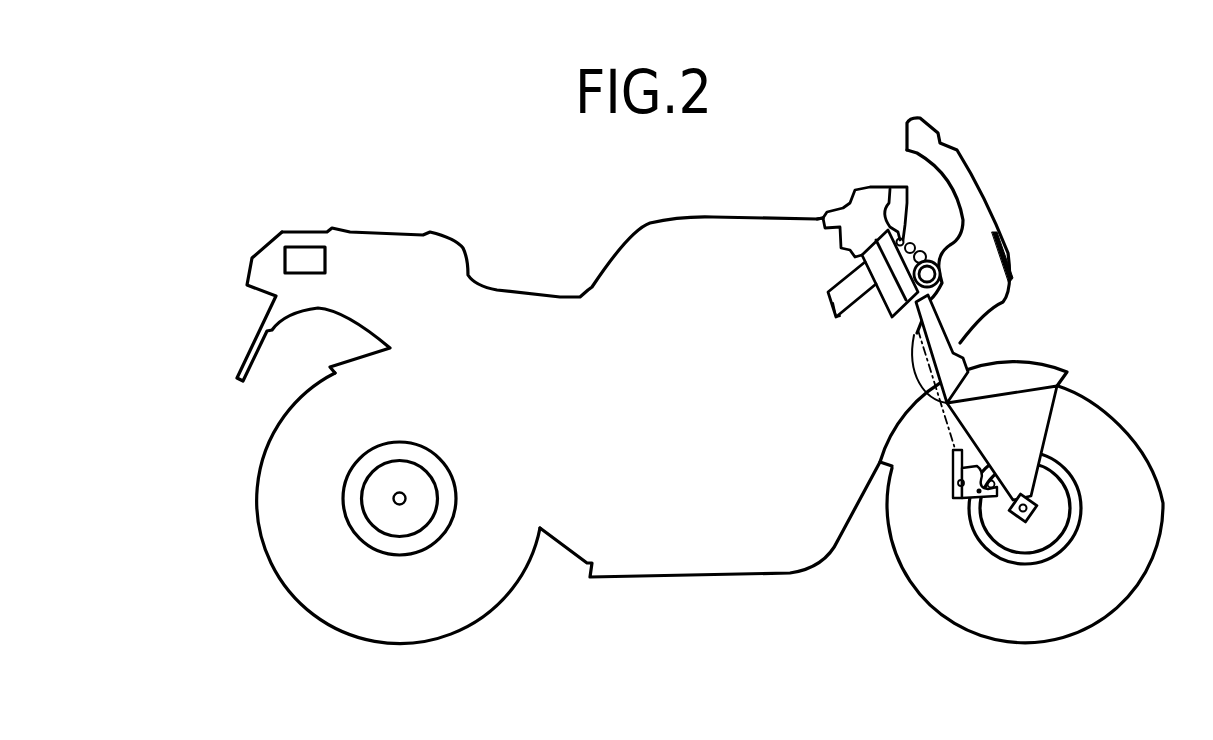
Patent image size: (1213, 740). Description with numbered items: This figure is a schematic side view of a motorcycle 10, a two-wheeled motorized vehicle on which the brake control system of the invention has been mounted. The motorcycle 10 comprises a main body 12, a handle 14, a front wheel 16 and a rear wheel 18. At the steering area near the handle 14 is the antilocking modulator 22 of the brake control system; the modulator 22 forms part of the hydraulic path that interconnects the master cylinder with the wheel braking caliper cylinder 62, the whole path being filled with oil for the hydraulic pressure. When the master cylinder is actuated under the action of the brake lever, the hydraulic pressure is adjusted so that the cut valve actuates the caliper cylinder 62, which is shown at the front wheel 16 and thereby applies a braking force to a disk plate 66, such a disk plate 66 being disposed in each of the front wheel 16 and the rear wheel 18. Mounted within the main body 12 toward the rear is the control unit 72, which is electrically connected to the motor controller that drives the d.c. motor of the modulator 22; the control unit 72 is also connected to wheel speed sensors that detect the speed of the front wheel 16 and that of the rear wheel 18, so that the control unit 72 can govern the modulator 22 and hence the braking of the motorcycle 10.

The motorcycle 10 is at (1064, 120).
The main body 12 is at (678, 206).
The handle 14 is at (940, 318).
The front wheel 16 is at (1025, 482).
The rear wheel 18 is at (250, 442).
The antilocking modulator 22 is at (963, 260).
The wheel braking caliper cylinder 62 is at (962, 497).
The disk plate 66 is at (1068, 487).
The control unit 72 is at (310, 247).